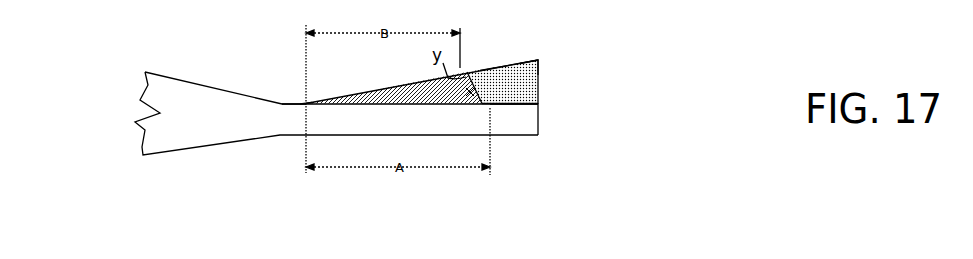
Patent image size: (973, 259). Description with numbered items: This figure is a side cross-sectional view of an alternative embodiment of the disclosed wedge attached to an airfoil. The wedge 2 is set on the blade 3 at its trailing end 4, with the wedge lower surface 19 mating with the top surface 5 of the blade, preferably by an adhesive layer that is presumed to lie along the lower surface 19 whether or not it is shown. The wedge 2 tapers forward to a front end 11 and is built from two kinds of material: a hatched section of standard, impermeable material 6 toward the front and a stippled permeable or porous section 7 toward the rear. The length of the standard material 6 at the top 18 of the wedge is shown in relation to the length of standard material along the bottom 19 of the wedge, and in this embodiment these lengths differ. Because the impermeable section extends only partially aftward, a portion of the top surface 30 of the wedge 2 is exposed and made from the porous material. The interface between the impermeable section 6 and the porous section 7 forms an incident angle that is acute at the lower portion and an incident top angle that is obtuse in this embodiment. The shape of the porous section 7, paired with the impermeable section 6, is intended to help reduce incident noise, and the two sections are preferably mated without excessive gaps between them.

The wedge 2 is at (343, 88).
The blade 3 is at (197, 117).
The trailing end 4 is at (507, 127).
The top surface of blade 5 is at (530, 108).
The standard material 6 is at (397, 102).
The porous section 7 is at (518, 78).
The front end of wedge 11 is at (310, 103).
The top of wedge 18 is at (502, 63).
The wedge lower surface 19 is at (522, 98).
The top surface of wedge 30 is at (525, 58).